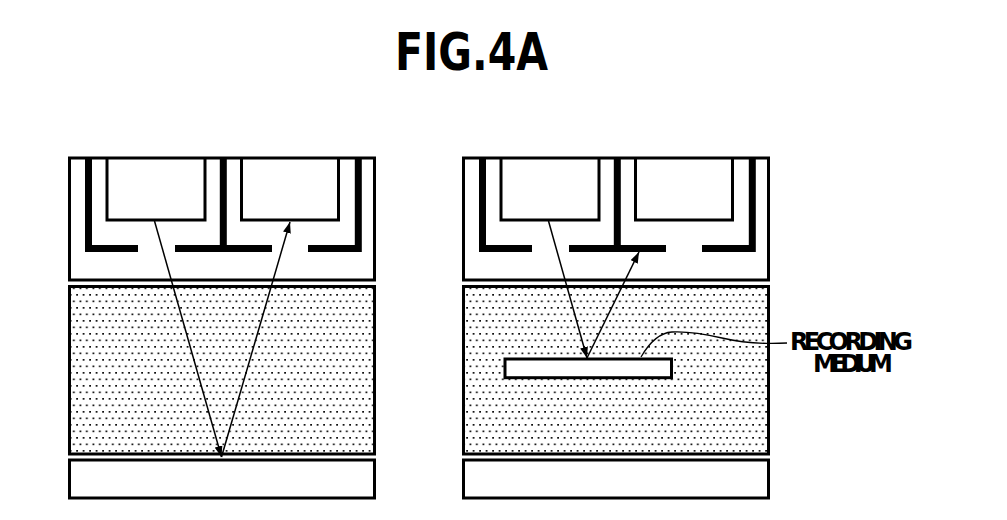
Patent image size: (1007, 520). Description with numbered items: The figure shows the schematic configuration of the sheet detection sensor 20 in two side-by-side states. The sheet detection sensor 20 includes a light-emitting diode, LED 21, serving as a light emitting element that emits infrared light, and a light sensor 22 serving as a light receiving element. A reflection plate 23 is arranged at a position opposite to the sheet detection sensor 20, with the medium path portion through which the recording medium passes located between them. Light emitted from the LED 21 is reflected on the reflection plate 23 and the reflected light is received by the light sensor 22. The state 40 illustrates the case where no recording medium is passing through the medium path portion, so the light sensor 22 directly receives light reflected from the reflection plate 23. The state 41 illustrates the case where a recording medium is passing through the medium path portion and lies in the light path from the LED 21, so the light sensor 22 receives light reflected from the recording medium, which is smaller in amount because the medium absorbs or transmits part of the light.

The sheet detection sensor 20 is at (368, 158).
The light-emitting diode (LED) 21 is at (157, 158).
The light sensor 22 is at (295, 158).
The reflection plate 23 is at (376, 477).
The state 40 is at (376, 408).
The state 41 is at (770, 405).